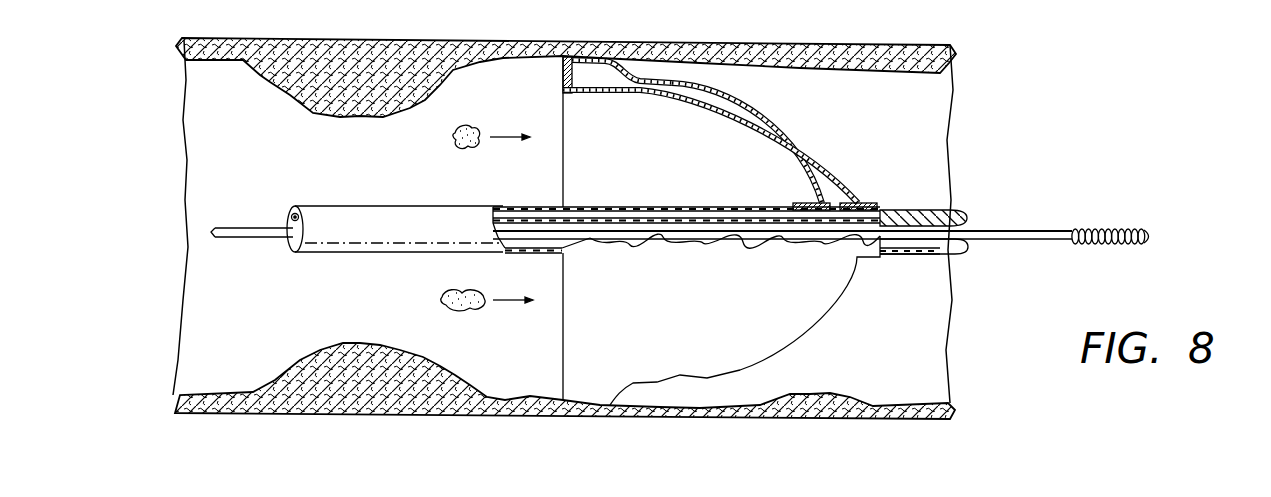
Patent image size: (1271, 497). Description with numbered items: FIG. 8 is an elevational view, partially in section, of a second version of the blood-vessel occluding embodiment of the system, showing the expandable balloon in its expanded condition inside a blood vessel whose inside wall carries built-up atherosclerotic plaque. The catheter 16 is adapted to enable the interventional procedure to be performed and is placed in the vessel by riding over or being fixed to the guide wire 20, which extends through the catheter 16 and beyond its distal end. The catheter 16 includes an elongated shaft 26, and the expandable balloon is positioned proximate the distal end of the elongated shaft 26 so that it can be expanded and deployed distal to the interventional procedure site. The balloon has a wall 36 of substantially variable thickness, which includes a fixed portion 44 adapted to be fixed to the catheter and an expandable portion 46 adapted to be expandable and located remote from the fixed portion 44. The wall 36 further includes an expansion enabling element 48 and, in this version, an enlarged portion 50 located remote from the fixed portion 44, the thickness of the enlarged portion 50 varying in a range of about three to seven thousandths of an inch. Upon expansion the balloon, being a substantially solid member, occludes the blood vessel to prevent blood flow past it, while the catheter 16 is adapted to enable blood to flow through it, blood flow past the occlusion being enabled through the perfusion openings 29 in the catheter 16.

The catheter 16 is at (337, 220).
The guide wire 20 is at (1017, 238).
The elongated shaft 26 is at (382, 230).
The perfusion openings 29 is at (930, 255).
The wall 36 is at (752, 97).
The fixed portion 44 is at (847, 200).
The expandable portion 46 is at (658, 83).
The expansion enabling element 48 is at (807, 125).
The enlarged portion 50 is at (593, 75).